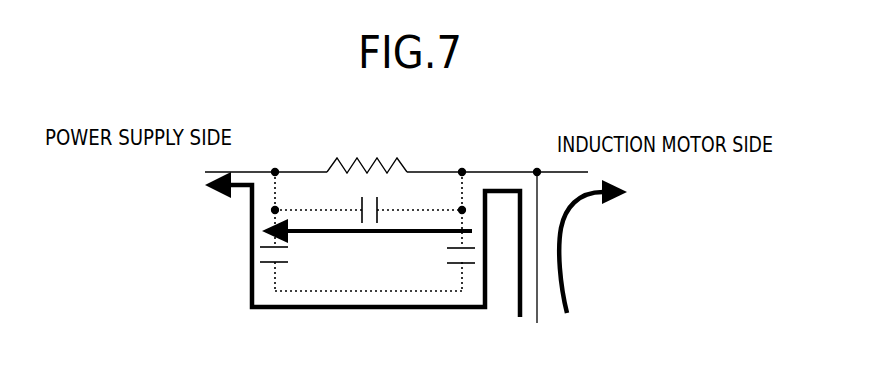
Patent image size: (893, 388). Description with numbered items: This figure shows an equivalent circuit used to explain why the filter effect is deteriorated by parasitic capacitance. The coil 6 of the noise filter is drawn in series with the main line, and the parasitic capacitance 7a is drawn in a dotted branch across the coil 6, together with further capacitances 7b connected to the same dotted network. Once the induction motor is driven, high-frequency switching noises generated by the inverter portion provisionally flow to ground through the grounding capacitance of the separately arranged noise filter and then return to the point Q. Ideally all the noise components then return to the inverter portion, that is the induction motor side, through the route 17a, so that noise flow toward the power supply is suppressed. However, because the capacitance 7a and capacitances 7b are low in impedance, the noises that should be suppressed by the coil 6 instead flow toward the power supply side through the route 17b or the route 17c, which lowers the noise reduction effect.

The coil 6 is at (357, 159).
The capacitance 7a is at (378, 201).
The capacitance 7b is at (280, 265).
The route 17a is at (563, 241).
The route 17b is at (250, 237).
The route 17c is at (395, 235).
The point Q is at (537, 268).